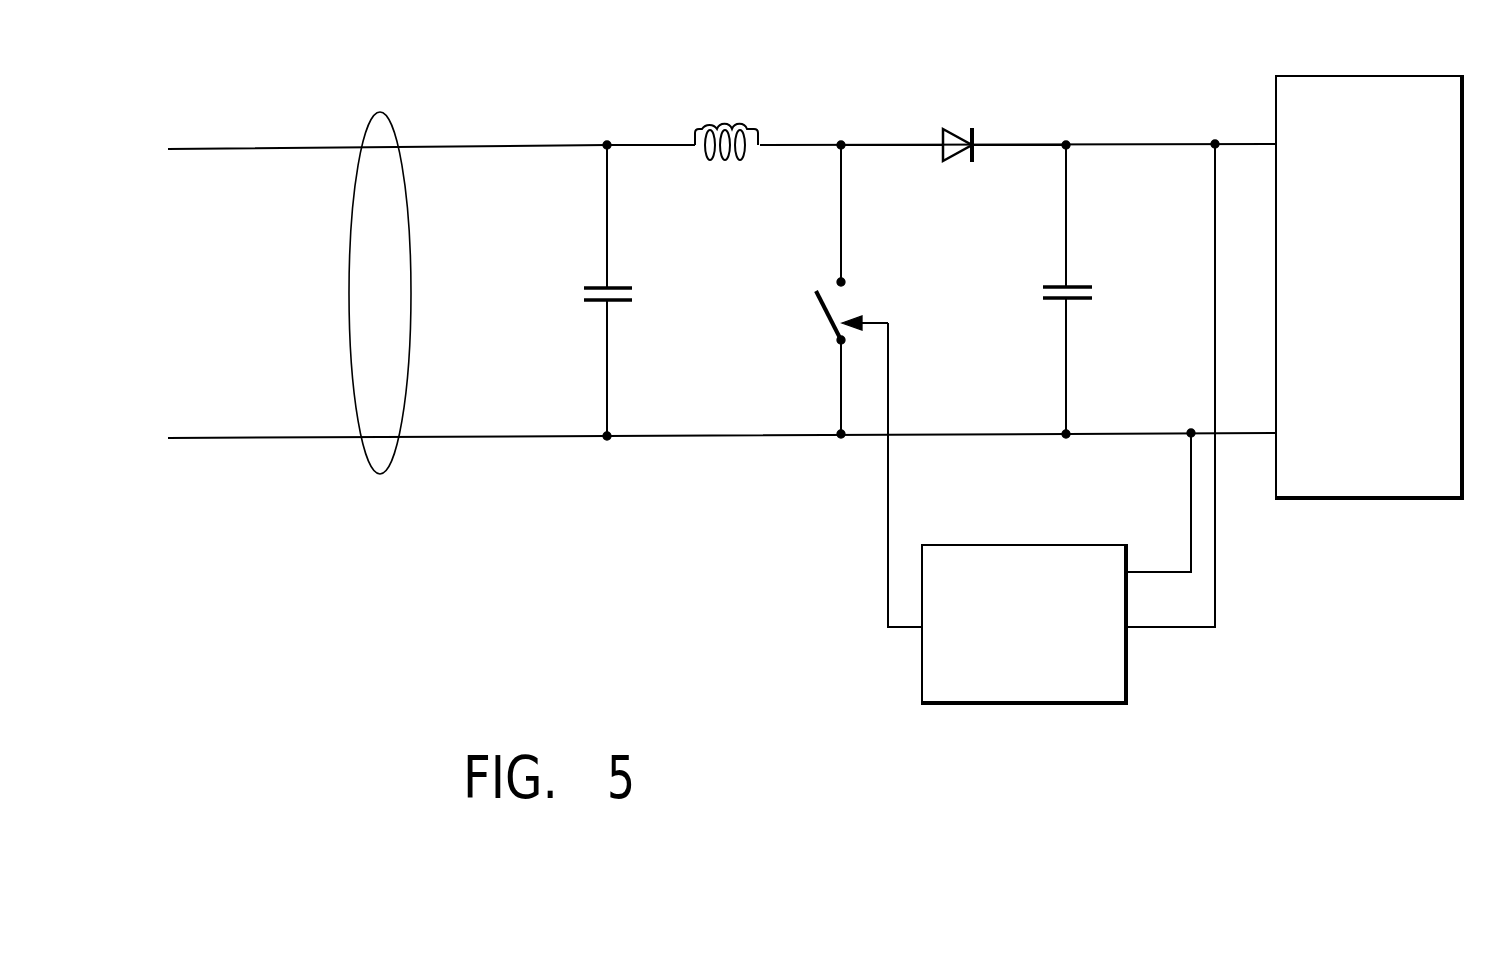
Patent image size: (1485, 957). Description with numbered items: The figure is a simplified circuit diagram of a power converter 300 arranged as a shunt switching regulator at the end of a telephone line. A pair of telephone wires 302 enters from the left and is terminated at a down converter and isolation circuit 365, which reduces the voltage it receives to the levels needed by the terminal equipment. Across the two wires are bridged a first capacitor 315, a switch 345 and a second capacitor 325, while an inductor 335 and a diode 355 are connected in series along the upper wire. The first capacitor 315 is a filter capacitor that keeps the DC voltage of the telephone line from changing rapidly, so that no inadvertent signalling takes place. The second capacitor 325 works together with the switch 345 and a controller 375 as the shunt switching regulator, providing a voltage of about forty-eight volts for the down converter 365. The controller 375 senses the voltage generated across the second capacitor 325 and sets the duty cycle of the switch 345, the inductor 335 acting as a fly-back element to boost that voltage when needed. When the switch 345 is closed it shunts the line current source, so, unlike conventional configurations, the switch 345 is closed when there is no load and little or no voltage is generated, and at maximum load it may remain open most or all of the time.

The power converter 300 is at (1123, 98).
The telephone wires 302 is at (380, 112).
The first capacitor 315 is at (612, 286).
The second capacitor 325 is at (1072, 286).
The inductor 335 is at (722, 130).
The switch 345 is at (842, 303).
The diode 355 is at (948, 128).
The down converter and isolation circuit 365 is at (1330, 76).
The controller 375 is at (1013, 706).